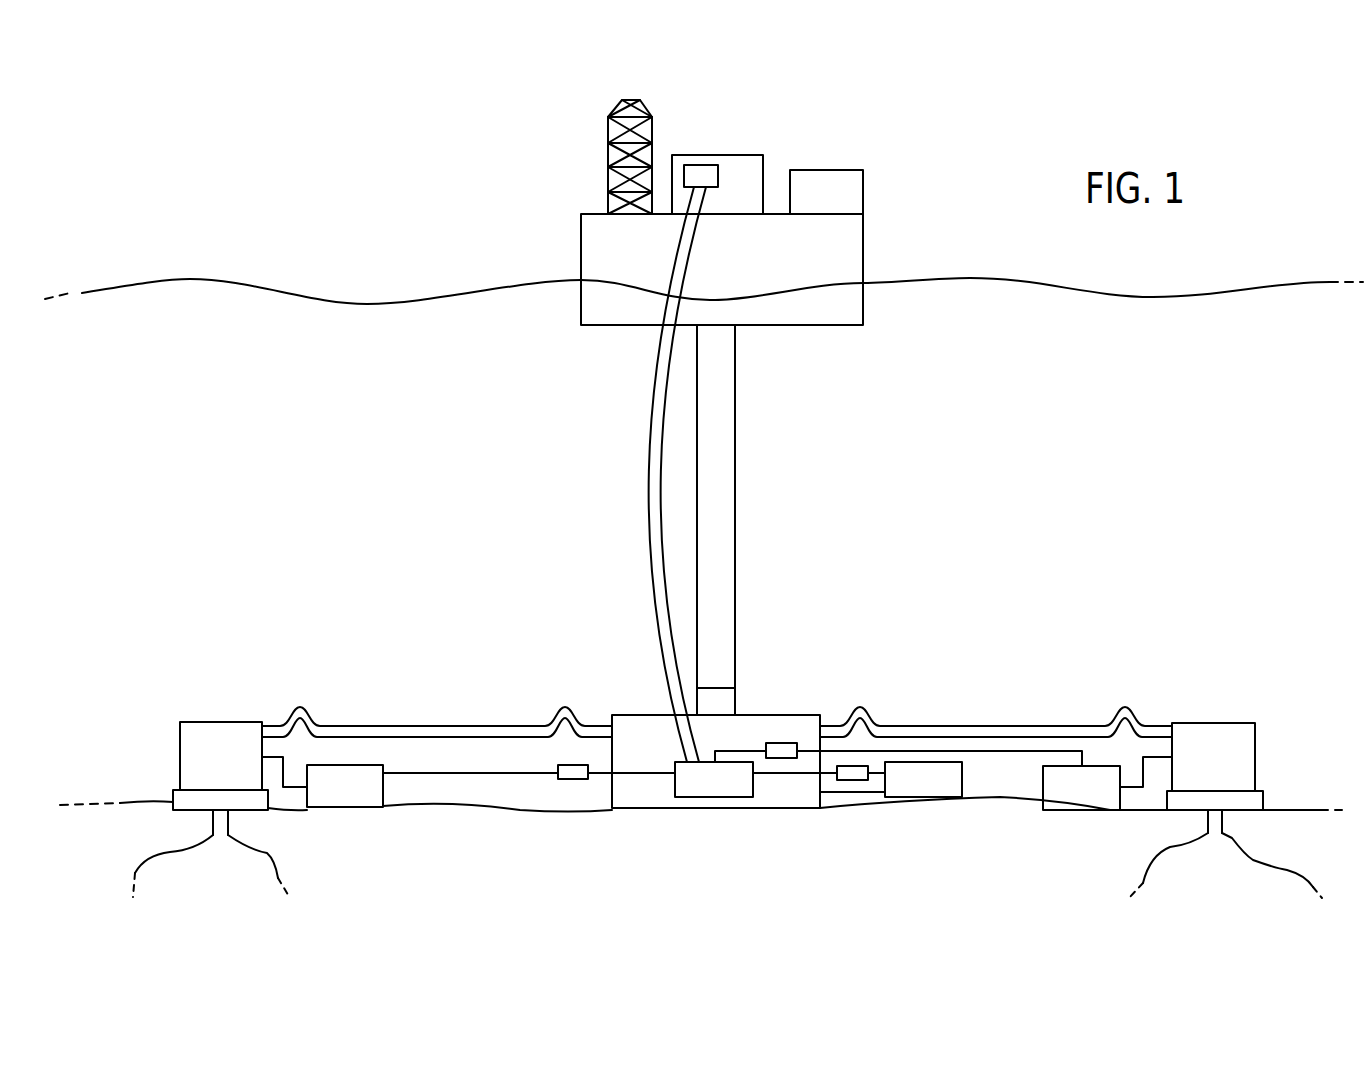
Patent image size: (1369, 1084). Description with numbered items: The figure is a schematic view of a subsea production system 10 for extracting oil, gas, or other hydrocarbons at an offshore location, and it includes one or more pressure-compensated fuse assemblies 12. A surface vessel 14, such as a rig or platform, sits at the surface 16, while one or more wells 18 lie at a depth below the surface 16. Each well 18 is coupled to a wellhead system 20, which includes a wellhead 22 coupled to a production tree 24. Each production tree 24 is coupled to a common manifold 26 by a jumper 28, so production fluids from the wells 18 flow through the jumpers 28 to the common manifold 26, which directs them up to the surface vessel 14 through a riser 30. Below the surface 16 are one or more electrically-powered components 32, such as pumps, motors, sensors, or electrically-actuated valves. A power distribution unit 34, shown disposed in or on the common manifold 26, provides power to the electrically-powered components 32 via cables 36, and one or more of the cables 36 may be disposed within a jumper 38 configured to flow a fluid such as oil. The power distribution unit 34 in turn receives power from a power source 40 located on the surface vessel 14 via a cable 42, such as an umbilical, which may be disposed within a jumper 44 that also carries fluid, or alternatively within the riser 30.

The subsea production system 10 is at (1052, 408).
The pressure-compensated fuse assembly 12 is at (573, 765).
The surface vessel 14 is at (840, 337).
The surface 16 is at (1240, 293).
The well 18 is at (277, 848).
The wellhead system 20 is at (153, 705).
The wellhead 22 is at (172, 800).
The production tree 24 is at (188, 722).
The common manifold 26 is at (768, 713).
The jumper 28 is at (387, 725).
The riser 30 is at (735, 520).
The electrically-powered component 32 is at (353, 810).
The power distribution unit 34 is at (720, 797).
The cable 36 is at (425, 772).
The jumper 38 is at (443, 772).
The power source 40 is at (700, 165).
The cable 42 is at (650, 457).
The jumper 44 is at (645, 413).